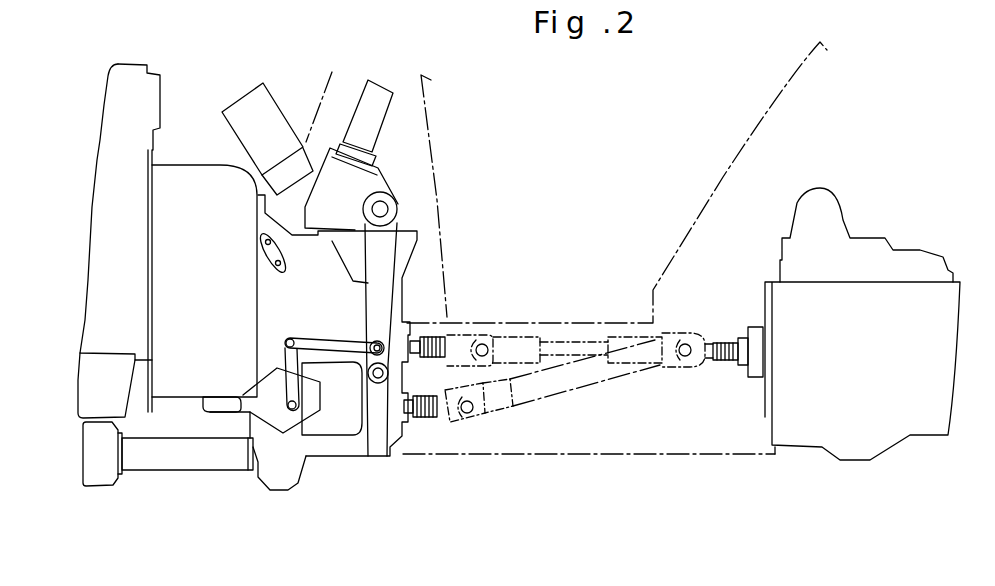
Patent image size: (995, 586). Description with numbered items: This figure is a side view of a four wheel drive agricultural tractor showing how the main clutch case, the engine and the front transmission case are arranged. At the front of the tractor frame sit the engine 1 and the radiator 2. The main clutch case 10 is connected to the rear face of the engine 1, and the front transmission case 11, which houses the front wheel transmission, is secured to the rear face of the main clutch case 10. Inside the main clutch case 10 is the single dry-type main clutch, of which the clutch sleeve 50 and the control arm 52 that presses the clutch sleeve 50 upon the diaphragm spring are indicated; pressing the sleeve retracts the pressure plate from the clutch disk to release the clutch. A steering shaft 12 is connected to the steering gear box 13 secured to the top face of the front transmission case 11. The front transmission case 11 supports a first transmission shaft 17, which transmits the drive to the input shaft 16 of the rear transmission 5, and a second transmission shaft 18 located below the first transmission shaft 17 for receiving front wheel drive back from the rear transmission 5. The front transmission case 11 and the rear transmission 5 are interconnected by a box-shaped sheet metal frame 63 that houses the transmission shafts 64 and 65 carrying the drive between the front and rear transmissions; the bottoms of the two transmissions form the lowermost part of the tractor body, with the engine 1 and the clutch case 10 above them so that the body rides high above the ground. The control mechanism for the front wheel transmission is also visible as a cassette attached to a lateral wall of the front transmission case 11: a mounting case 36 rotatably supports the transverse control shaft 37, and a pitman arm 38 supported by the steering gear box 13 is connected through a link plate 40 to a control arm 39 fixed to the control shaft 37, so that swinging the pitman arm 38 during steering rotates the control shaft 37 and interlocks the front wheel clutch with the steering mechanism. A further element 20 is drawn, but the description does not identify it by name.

The engine 1 is at (95, 214).
The radiator 2 is at (277, 114).
The rear transmission 5 is at (833, 443).
The main clutch case 10 is at (193, 172).
The front transmission case 11 is at (352, 448).
The steering shaft 12 is at (374, 112).
The steering gear box 13 is at (372, 180).
The input shaft of the rear transmission 16 is at (727, 342).
The first transmission shaft 17 is at (438, 342).
The second transmission shaft 18 is at (428, 417).
The pivot shaft 20 is at (103, 483).
The mounting case 36 is at (317, 432).
The control shaft 37 is at (290, 412).
The pitman arm 38 is at (383, 302).
The control arm 39 is at (302, 382).
The link plate 40 is at (325, 339).
The clutch sleeve 50 is at (552, 322).
The control arm 52 is at (267, 255).
The sheet metal frame 63 is at (542, 457).
The transmission shaft 64 is at (577, 380).
The transmission shaft 65 is at (595, 340).